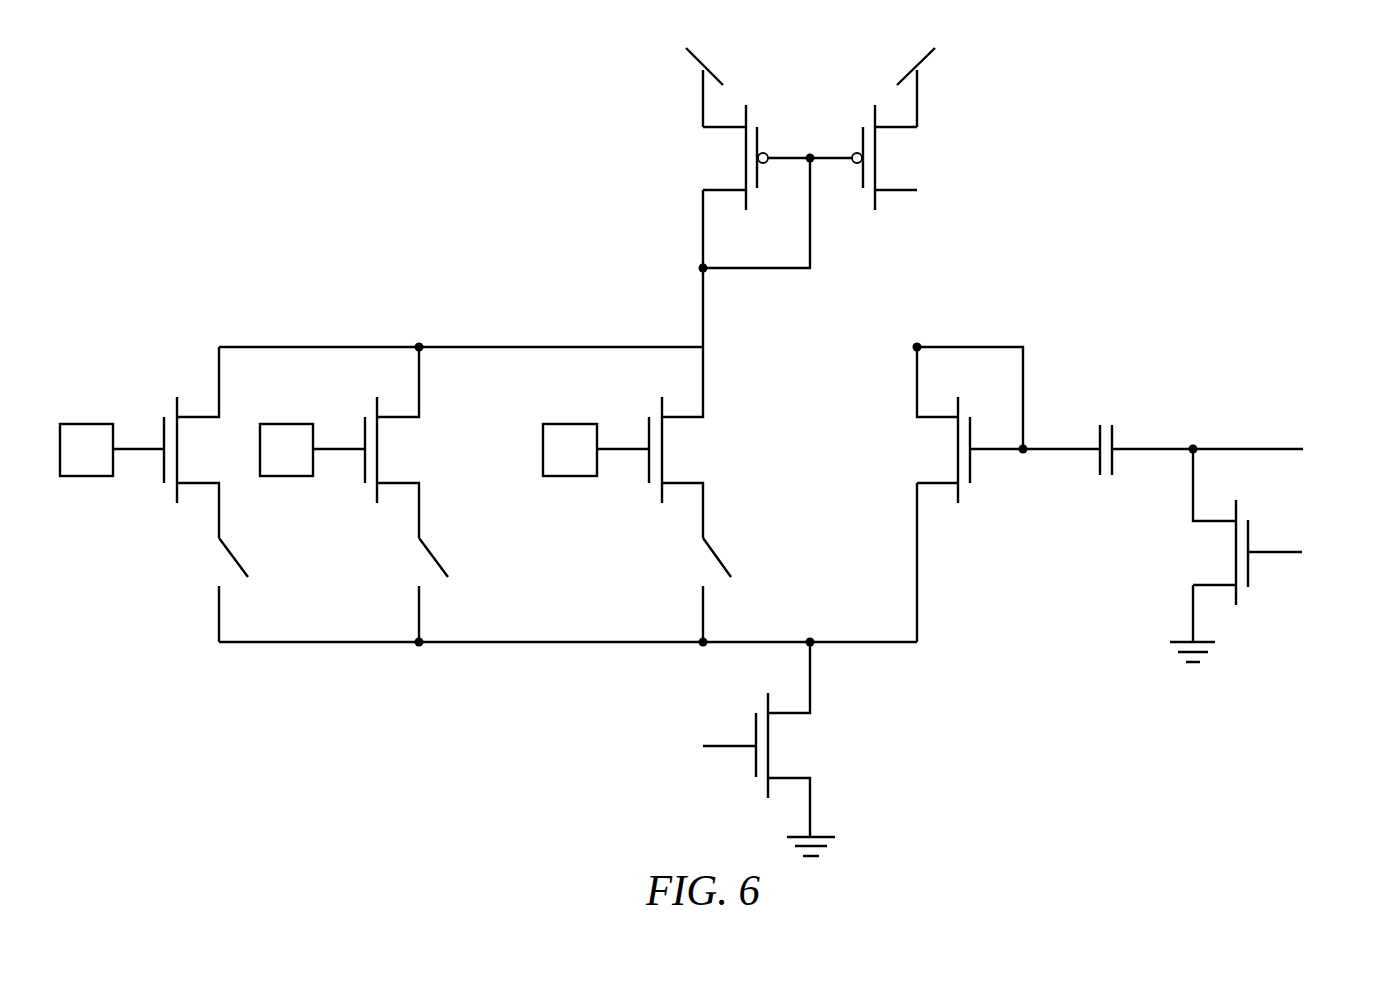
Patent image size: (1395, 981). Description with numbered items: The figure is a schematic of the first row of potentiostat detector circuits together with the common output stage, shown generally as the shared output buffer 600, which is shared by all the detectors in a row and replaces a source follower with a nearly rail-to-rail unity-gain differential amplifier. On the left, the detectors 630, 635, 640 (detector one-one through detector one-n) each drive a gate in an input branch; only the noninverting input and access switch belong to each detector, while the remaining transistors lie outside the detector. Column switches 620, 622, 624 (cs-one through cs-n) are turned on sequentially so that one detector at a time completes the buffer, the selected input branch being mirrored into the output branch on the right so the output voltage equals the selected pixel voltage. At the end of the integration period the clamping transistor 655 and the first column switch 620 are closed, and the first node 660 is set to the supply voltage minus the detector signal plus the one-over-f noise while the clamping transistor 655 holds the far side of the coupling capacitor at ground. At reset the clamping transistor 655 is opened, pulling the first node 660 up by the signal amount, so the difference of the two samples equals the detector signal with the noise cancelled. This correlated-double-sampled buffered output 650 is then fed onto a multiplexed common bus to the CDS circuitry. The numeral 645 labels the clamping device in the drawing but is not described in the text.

The shared output buffer 600 is at (1262, 118).
The column switch cs1 620 is at (234, 552).
The column switch cs2 622 is at (434, 552).
The column switch csn 624 is at (718, 552).
The detector 11 630 is at (86, 424).
The detector 12 635 is at (286, 424).
The detector 1n 640 is at (570, 424).
The transistor M 645 is at (1248, 575).
The buffered output 650 is at (1253, 449).
The clamping transistor Mclamp 655 is at (1190, 446).
The node V1 660 is at (1026, 453).